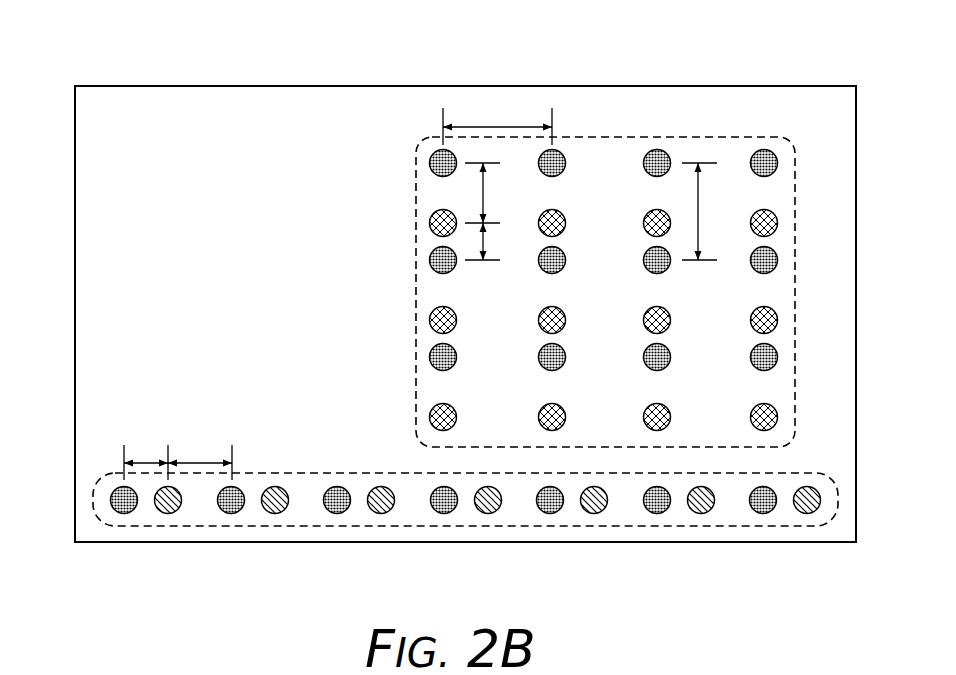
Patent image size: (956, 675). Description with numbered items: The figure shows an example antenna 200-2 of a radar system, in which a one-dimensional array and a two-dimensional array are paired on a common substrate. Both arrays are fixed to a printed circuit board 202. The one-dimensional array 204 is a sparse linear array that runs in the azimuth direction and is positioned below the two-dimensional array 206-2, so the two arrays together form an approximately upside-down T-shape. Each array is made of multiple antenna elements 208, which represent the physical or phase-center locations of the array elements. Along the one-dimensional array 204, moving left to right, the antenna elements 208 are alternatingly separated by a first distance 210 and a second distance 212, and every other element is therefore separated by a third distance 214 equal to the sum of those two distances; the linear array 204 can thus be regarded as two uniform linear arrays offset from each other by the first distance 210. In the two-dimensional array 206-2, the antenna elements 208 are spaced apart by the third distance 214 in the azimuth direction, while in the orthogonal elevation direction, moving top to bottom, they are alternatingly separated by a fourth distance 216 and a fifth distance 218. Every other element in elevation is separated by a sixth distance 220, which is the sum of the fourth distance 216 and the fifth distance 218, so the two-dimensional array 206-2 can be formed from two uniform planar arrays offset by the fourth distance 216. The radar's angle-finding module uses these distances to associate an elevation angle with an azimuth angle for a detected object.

The antenna 200-2 is at (133, 40).
The printed circuit board 202 is at (465, 542).
The 1D array 204 is at (322, 527).
The 2D array 206-2 is at (417, 228).
The antenna element 208 is at (433, 312).
The first distance 210 is at (148, 462).
The second distance 212 is at (203, 462).
The third distance 214 is at (497, 123).
The fourth distance 216 is at (485, 216).
The fifth distance 218 is at (488, 243).
The sixth distance 220 is at (699, 200).